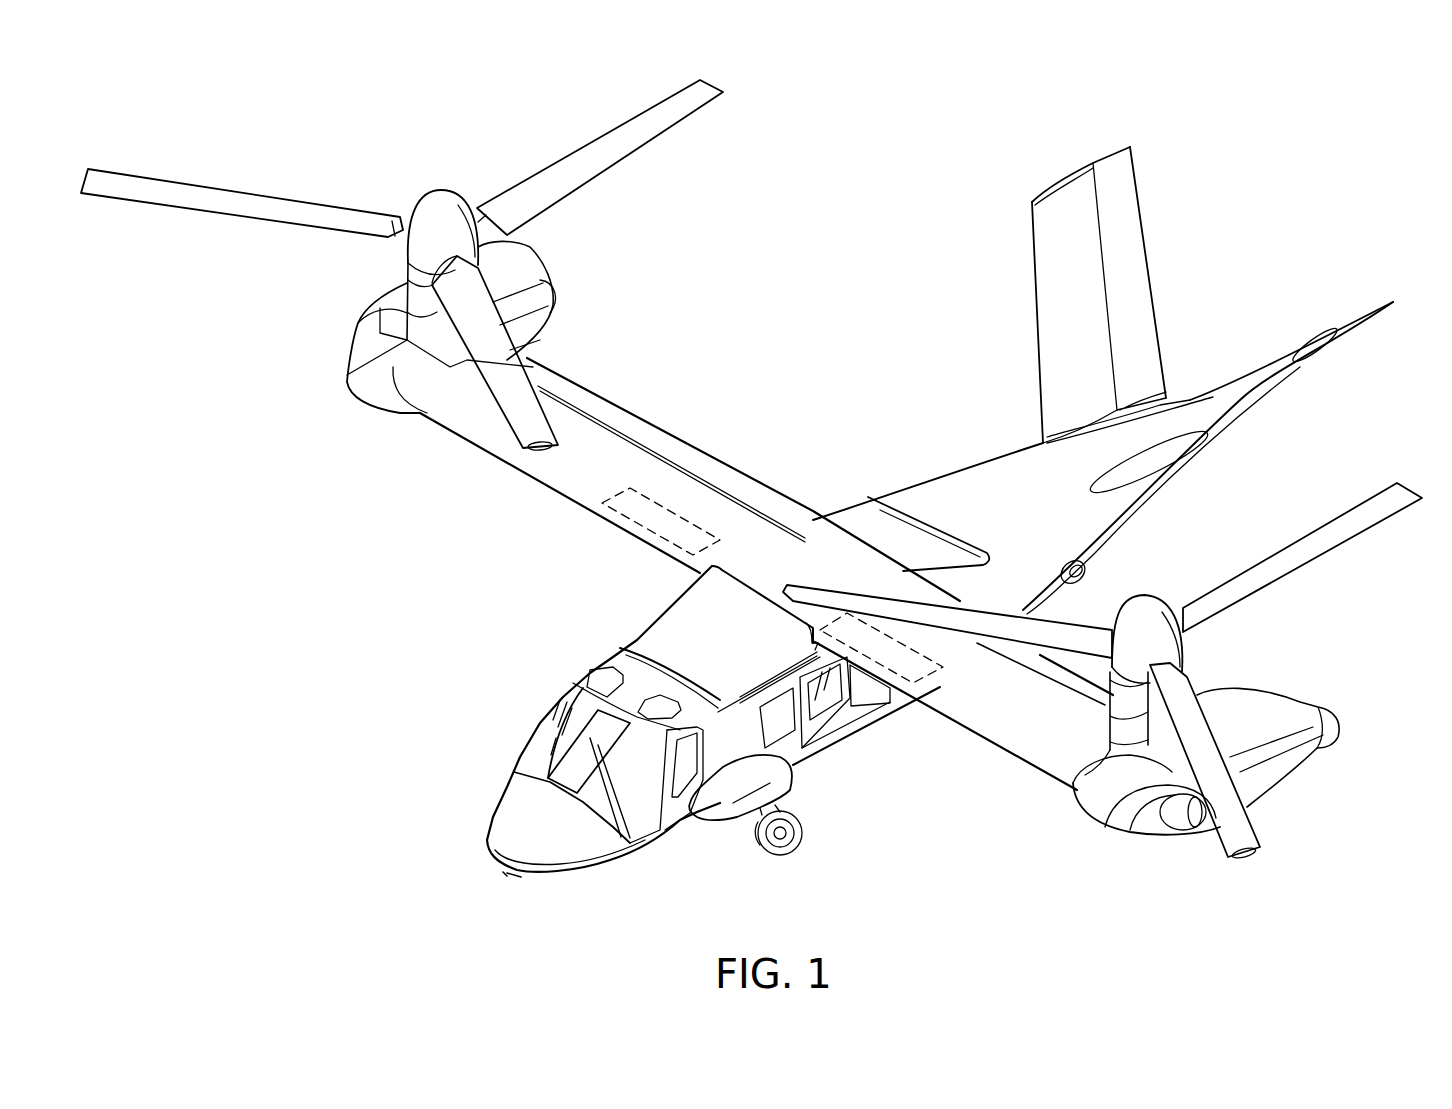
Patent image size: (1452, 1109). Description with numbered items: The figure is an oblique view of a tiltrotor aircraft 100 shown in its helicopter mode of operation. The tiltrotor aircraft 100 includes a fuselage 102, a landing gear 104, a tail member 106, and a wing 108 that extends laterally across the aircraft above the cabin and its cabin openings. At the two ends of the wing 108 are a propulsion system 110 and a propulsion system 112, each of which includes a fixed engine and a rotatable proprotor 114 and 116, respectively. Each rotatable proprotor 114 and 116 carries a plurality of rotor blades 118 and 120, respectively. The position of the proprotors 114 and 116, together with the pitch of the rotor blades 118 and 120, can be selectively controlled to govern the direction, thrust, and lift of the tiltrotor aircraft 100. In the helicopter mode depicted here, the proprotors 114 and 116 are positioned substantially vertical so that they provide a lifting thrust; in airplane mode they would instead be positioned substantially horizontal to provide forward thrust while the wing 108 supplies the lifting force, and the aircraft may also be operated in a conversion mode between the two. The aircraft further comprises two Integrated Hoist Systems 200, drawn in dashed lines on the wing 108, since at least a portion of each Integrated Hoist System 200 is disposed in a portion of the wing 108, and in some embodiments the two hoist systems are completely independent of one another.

The tiltrotor aircraft 100 is at (751, 500).
The fuselage 102 is at (570, 873).
The landing gear 104 is at (782, 853).
The tail member 106 is at (1150, 252).
The wing 108 is at (970, 735).
The propulsion system 110 is at (1141, 854).
The propulsion system 112 is at (333, 262).
The rotatable proprotor 114 is at (1183, 662).
The rotatable proprotor 116 is at (446, 190).
The rotor blades 118 is at (1262, 834).
The rotor blades 120 is at (588, 146).
The Integrated Hoist System 200 is at (663, 520).